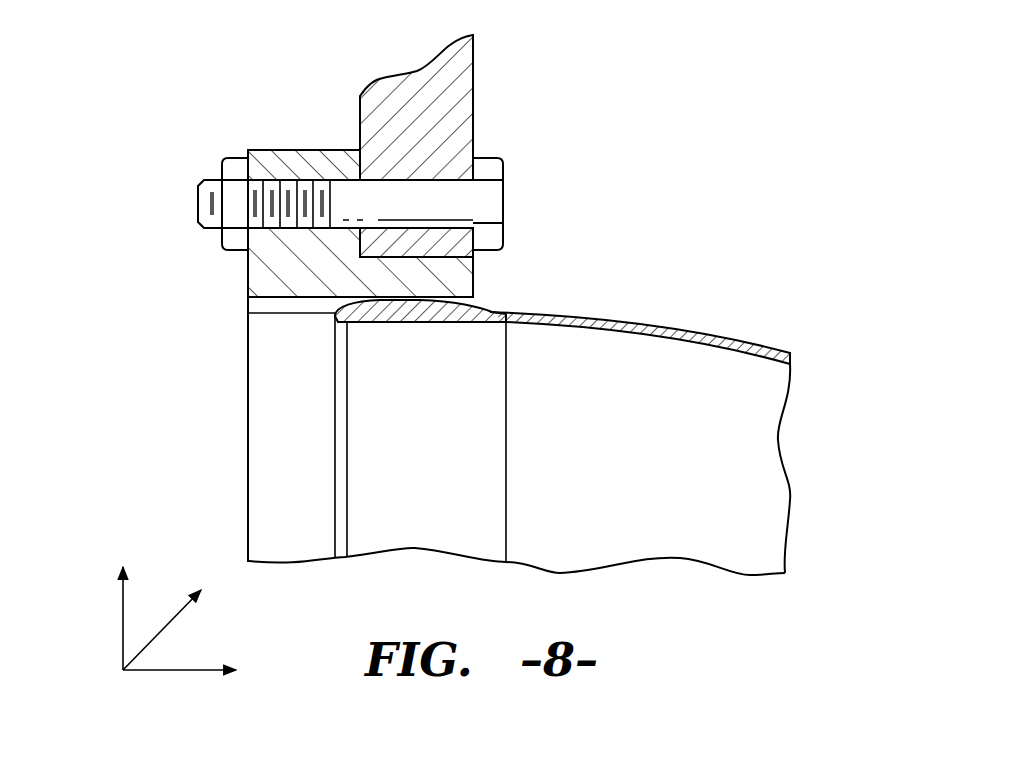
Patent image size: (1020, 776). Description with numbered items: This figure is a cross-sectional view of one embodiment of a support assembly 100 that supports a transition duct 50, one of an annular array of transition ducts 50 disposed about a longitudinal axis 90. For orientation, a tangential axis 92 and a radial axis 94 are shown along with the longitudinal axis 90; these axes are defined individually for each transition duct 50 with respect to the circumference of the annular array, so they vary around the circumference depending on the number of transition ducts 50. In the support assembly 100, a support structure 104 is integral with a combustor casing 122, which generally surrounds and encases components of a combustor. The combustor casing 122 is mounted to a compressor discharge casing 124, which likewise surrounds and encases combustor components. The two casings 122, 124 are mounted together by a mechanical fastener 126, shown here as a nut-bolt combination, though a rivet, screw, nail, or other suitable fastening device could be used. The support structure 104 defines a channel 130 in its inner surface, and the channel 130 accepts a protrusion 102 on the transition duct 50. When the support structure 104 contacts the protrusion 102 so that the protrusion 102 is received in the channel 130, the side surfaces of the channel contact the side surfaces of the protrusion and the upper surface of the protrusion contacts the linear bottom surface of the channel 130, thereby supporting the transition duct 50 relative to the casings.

The transition duct 50 is at (690, 317).
The longitudinal axis 90 is at (167, 673).
The tangential axis 92 is at (175, 618).
The radial axis 94 is at (122, 627).
The support assembly 100 is at (652, 203).
The protrusion 102 is at (492, 310).
The support structure 104 is at (247, 272).
The combustor casing 122 is at (298, 150).
The compressor discharge casing 124 is at (475, 82).
The mechanical fastener 126 is at (423, 193).
The channel 130 is at (273, 303).